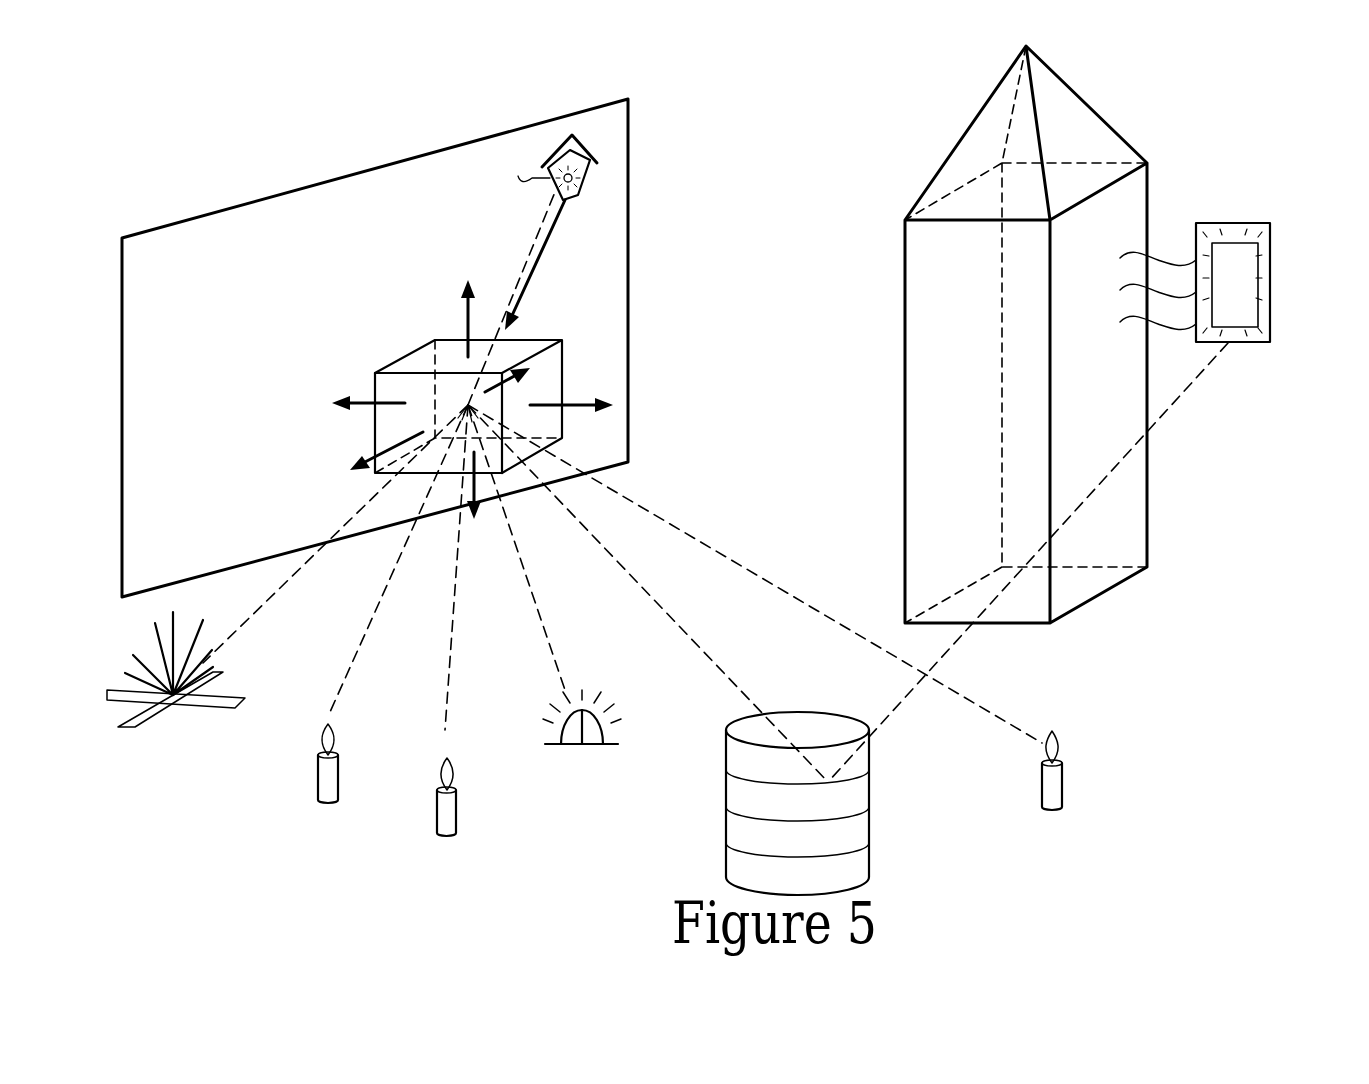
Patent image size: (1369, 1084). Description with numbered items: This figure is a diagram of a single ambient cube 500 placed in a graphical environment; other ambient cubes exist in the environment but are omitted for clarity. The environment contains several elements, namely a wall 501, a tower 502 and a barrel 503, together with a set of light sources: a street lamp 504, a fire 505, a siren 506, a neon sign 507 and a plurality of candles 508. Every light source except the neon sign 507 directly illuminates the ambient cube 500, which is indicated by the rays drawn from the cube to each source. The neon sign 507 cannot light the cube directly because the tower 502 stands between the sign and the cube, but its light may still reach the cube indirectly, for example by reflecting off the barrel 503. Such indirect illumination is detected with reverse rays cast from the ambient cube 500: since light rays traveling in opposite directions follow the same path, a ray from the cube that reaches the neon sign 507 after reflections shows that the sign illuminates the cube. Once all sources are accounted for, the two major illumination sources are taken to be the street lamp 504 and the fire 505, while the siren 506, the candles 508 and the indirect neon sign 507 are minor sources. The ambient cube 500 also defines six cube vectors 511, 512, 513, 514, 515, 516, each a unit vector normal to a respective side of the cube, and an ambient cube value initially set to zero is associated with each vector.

The ambient cube 500 is at (563, 428).
The wall 501 is at (165, 517).
The tower 502 is at (1147, 472).
The barrel 503 is at (869, 790).
The street lamp 504 is at (598, 163).
The fire 505 is at (146, 656).
The siren 506 is at (604, 736).
The neon sign 507 is at (1270, 283).
The candles 508 is at (438, 808).
The cube vector 511 is at (374, 445).
The cube vector 512 is at (475, 484).
The cube vector 513 is at (578, 402).
The cube vector 514 is at (525, 386).
The cube vector 515 is at (466, 310).
The cube vector 516 is at (345, 393).